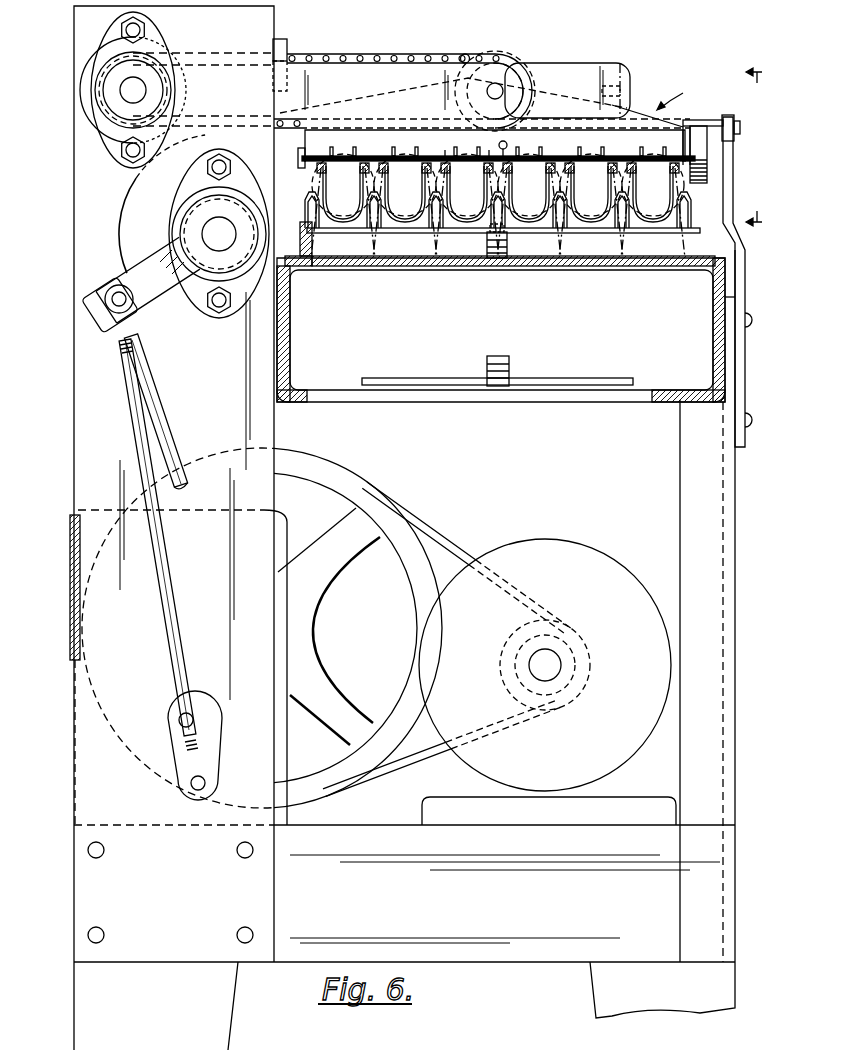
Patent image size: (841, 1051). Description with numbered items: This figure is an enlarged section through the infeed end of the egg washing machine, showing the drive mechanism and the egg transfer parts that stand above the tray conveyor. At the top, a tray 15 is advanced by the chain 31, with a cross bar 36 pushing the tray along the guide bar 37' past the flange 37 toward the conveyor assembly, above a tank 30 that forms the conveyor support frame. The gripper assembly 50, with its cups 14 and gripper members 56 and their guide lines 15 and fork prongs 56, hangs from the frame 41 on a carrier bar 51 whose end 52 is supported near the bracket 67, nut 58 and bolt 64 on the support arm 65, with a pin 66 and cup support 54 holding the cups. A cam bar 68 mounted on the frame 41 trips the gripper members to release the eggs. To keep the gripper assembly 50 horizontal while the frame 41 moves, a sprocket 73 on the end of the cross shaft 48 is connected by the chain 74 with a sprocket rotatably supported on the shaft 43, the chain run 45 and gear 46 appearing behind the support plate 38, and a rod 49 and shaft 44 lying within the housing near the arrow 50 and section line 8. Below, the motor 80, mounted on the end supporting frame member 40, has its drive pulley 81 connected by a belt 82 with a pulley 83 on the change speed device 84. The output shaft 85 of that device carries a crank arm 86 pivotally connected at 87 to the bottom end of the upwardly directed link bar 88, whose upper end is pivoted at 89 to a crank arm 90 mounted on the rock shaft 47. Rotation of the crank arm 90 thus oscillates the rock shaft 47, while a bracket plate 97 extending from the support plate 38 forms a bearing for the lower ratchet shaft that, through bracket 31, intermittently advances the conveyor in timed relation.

The section line 8- 8 is at (763, 150).
The cup 14 is at (350, 157).
The tray 15 is at (606, 250).
The conveyor support frame 30 is at (662, 402).
The chain 31 is at (490, 258).
The cross bar 36 is at (450, 236).
The tank top flange 37 is at (513, 276).
The guide bar 37' is at (292, 234).
The support plate 38 is at (74, 404).
The end supporting frame member 40 is at (735, 665).
The frame 41 is at (535, 64).
The shaft 43 is at (137, 89).
The shaft 44 is at (624, 82).
The chain run 45 is at (186, 98).
The gear 46 is at (190, 139).
The rock shaft 47 is at (215, 233).
The cross shaft 48 is at (487, 93).
The rod 49 is at (647, 111).
The gripper assembly 50 is at (670, 91).
The cup carrier bar 51 is at (307, 137).
The carrier bar end 52 is at (683, 135).
The cup support 54 is at (465, 157).
The gripper member 56 is at (382, 207).
The adjusting nut 58 is at (696, 185).
The bolt 64 is at (736, 118).
The support arm 65 is at (743, 178).
The pin 66 is at (508, 144).
The bracket 67 is at (695, 120).
The cam bar 68 is at (287, 43).
The sprocket 73 is at (466, 55).
The chain 74 is at (396, 56).
The motor 80 is at (582, 553).
The drive pulley 81 is at (500, 660).
The belt 82 is at (428, 540).
The pulley 83 is at (332, 471).
The change speed device 84 is at (289, 533).
The output shaft 85 is at (180, 720).
The crank arm 86 is at (217, 762).
The pivot 87 is at (207, 784).
The link bar 88 is at (172, 596).
The pivot 89 is at (113, 307).
The crank arm 90 is at (160, 288).
The bracket plate 97 is at (77, 513).